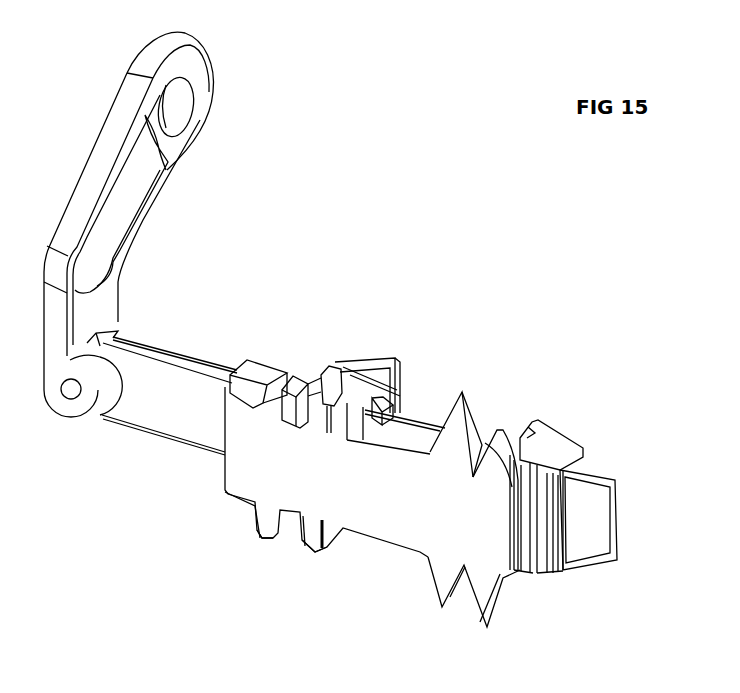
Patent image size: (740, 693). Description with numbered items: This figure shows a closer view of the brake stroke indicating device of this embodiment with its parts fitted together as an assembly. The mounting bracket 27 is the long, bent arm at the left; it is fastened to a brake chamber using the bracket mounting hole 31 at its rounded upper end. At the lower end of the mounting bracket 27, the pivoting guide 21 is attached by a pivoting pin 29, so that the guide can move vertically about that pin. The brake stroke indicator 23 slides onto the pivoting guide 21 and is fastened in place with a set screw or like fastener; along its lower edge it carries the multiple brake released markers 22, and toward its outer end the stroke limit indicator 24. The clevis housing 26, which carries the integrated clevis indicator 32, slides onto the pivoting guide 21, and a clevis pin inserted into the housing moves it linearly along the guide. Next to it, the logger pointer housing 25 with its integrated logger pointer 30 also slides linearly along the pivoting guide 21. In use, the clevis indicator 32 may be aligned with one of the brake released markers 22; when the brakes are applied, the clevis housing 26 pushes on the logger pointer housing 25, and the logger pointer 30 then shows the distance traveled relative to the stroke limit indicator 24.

The pivoting guide 21 is at (604, 524).
The brake released markers 22 is at (320, 558).
The brake stroke indicator 23 is at (385, 515).
The stroke limit indicator 24 is at (497, 624).
The logger pointer housing 25 is at (551, 438).
The clevis housing 26 is at (399, 347).
The mounting bracket 27 is at (114, 99).
The pivoting pin 29 is at (66, 402).
The logger pointer 30 is at (468, 386).
The bracket mounting hole 31 is at (186, 101).
The clevis indicator 32 is at (333, 347).